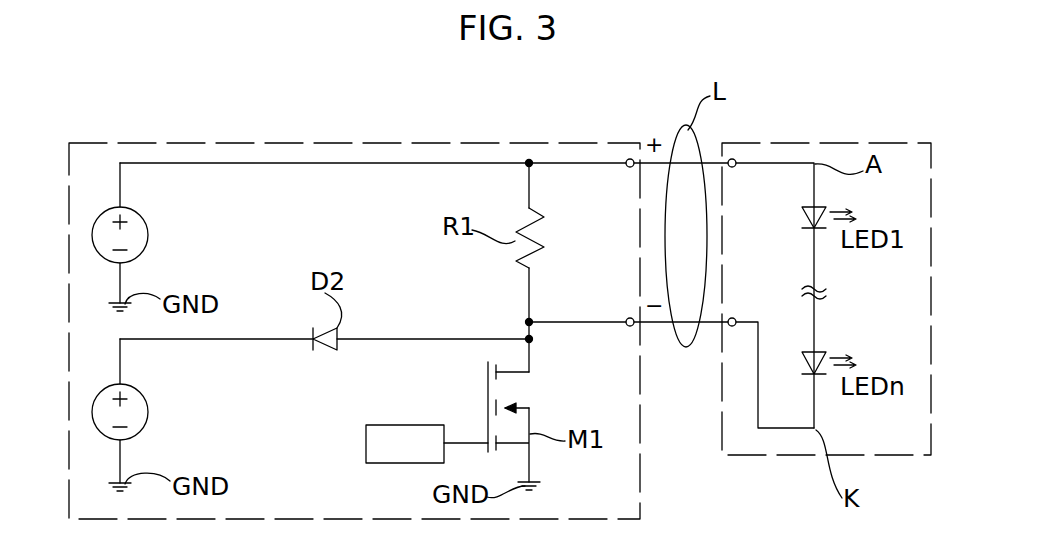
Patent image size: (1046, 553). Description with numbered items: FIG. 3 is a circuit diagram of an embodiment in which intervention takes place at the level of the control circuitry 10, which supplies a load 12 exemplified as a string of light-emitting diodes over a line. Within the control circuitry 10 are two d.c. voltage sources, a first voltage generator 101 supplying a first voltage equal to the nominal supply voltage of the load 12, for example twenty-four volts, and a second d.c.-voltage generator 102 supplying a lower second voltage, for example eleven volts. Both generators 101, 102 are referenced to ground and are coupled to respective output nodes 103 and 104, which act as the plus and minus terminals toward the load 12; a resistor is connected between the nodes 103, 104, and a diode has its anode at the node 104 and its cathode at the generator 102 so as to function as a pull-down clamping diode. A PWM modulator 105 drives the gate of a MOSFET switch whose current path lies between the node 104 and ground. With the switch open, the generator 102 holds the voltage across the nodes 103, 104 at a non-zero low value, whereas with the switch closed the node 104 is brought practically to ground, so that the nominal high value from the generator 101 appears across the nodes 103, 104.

The control circuitry 10 is at (262, 122).
The load 12 is at (878, 117).
The first voltage generator 101 is at (148, 230).
The second d.c.-voltage generator 102 is at (142, 405).
The first node 103 is at (627, 168).
The second node 104 is at (627, 327).
The PWM modulator 105 is at (372, 438).